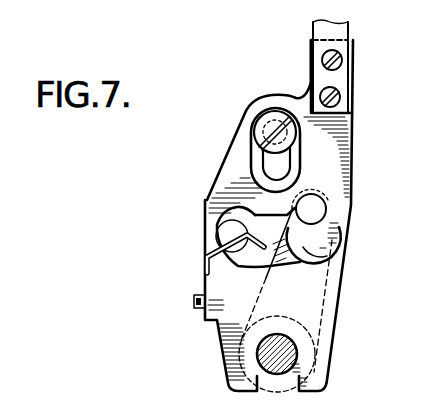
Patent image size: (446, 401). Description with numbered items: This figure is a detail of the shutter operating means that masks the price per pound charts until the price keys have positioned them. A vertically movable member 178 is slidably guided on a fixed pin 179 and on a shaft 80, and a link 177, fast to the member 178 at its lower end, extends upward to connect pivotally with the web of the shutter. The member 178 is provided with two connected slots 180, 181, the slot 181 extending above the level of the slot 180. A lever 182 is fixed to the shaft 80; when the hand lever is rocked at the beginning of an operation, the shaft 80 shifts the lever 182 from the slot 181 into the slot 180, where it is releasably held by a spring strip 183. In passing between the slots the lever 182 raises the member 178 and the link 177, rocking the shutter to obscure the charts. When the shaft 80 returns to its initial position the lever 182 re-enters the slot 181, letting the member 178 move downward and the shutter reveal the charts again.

The shaft 80 is at (286, 357).
The link 177 is at (342, 30).
The member 178 is at (233, 156).
The fixed pin 179 is at (258, 117).
The slot 180 is at (215, 220).
The slot 181 is at (323, 242).
The lever 182 is at (320, 258).
The spring strip 183 is at (206, 273).